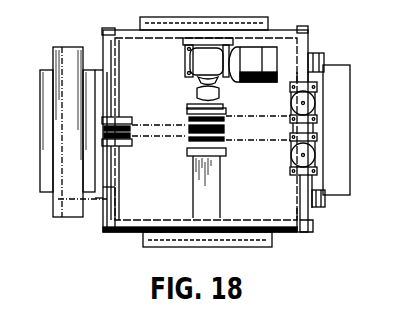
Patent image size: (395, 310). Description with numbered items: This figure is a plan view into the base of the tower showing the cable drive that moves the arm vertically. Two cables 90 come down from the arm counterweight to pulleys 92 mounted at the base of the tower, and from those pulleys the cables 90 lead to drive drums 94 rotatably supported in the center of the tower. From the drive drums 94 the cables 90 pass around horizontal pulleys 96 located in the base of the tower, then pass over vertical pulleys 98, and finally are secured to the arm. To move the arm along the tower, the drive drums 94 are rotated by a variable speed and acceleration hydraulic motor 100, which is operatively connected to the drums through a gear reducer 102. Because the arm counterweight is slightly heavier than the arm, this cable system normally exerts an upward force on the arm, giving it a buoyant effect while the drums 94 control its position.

The cables 90 is at (171, 129).
The pulleys 92 is at (130, 118).
The drive drums 94 is at (226, 130).
The horizontal pulleys 96 is at (320, 104).
The vertical pulleys 98 is at (326, 60).
The hydraulic motor 100 is at (262, 83).
The gear reducer 102 is at (192, 62).